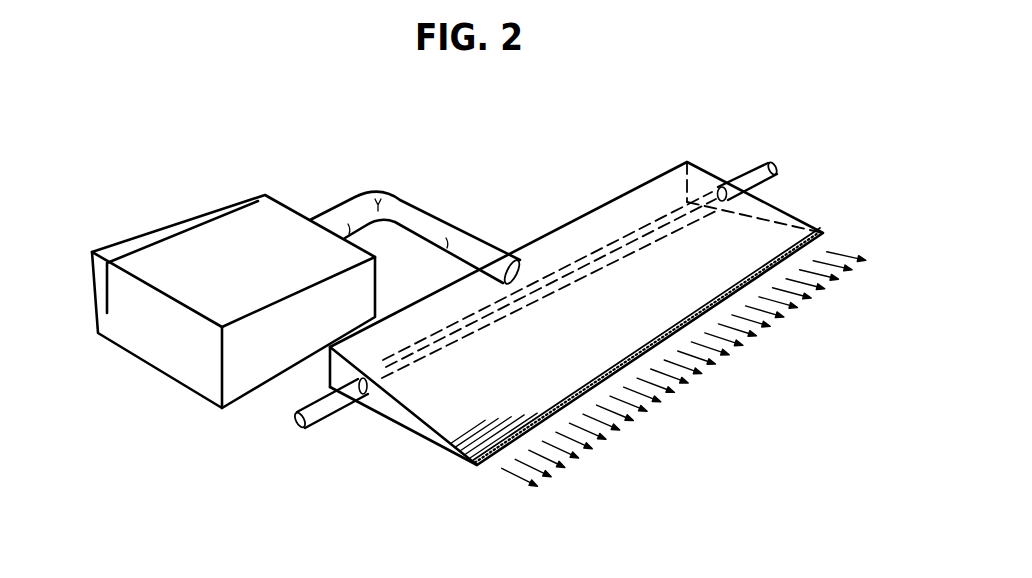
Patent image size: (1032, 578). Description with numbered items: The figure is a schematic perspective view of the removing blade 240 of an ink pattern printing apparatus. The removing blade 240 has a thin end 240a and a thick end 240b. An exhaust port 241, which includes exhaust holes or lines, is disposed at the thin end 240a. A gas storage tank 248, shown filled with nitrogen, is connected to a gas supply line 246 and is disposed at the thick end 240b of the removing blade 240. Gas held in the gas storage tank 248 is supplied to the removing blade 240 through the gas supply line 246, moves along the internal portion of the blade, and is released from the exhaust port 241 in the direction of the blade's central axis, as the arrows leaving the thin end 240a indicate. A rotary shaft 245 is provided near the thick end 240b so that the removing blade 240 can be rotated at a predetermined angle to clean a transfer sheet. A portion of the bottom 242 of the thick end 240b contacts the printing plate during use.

The removing blade 240 is at (532, 322).
The thin end 240a is at (477, 467).
The thick end 240b is at (323, 370).
The exhaust port 241 is at (587, 385).
The bottom 242 is at (427, 439).
The rotary shaft 245 is at (323, 419).
The gas supply line 246 is at (428, 230).
The gas storage tank 248 is at (208, 237).